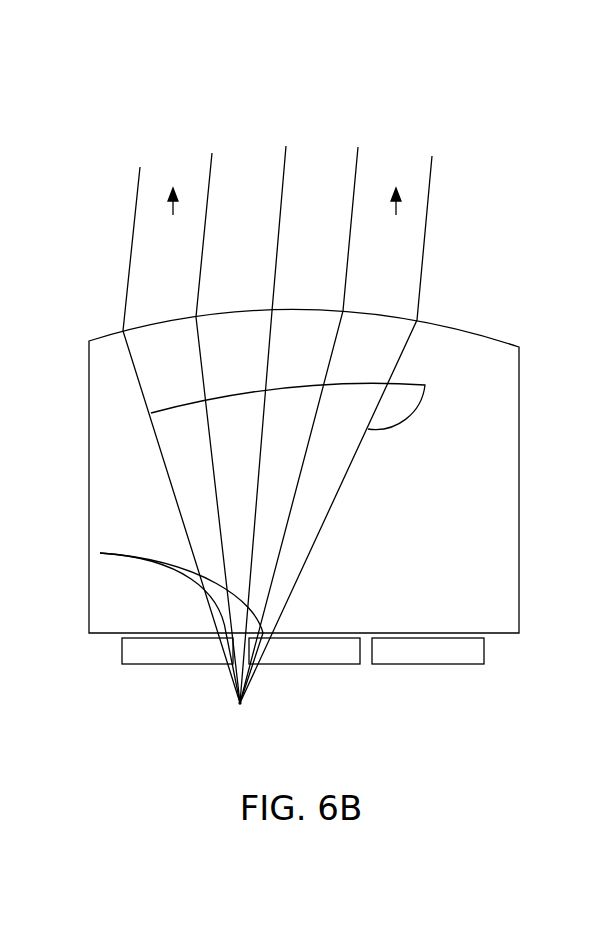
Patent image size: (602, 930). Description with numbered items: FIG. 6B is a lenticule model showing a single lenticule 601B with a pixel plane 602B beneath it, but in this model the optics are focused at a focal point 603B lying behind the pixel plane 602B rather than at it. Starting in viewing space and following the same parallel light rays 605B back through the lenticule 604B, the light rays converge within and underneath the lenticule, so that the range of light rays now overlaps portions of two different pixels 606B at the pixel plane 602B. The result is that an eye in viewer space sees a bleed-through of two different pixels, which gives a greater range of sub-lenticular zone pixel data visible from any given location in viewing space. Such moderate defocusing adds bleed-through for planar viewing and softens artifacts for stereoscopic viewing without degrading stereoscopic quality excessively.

The lenticule 601B is at (465, 331).
The pixel plane 602B is at (335, 640).
The focal point 603B is at (241, 700).
The lenticule optics 604B is at (319, 397).
The parallel light rays 605B is at (184, 169).
The two different pixels 606B is at (100, 553).